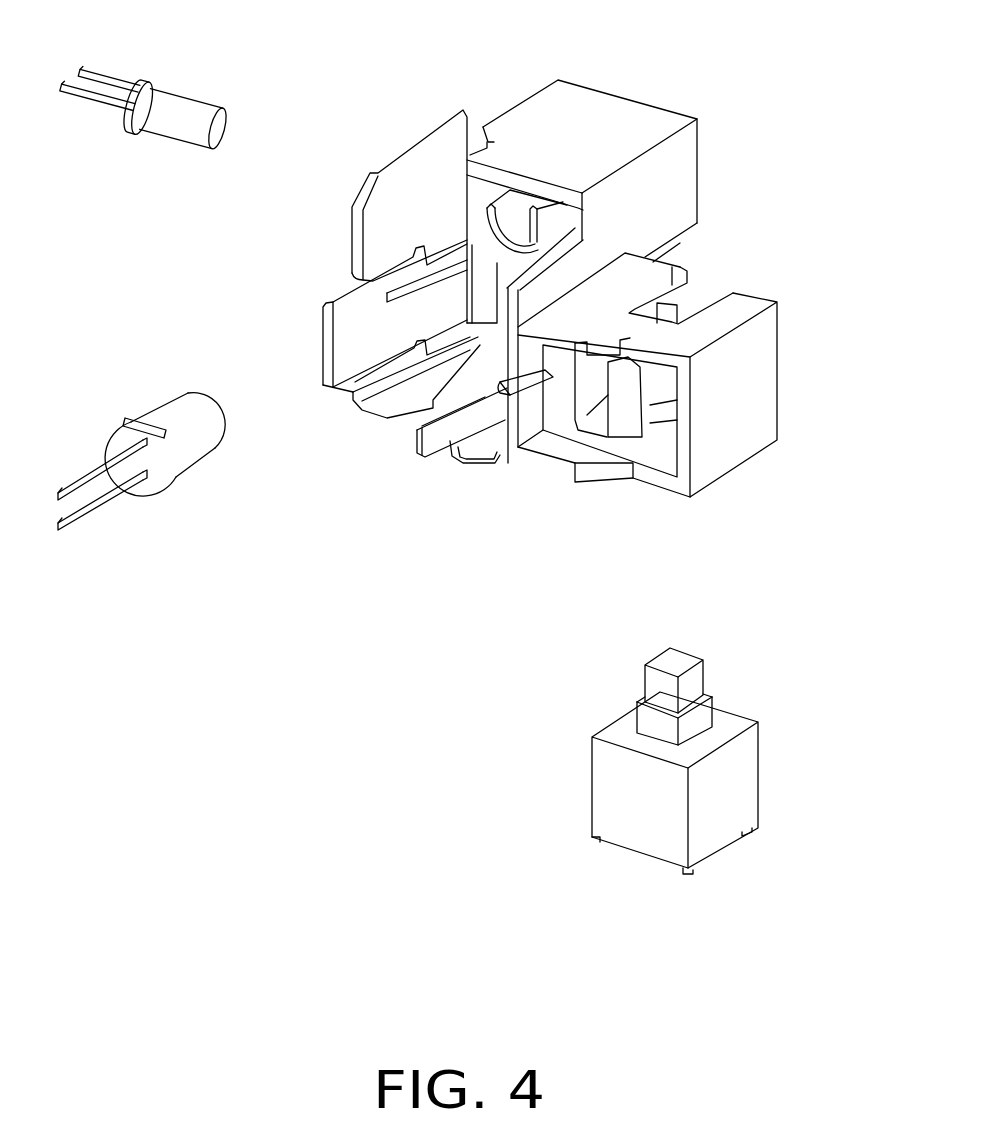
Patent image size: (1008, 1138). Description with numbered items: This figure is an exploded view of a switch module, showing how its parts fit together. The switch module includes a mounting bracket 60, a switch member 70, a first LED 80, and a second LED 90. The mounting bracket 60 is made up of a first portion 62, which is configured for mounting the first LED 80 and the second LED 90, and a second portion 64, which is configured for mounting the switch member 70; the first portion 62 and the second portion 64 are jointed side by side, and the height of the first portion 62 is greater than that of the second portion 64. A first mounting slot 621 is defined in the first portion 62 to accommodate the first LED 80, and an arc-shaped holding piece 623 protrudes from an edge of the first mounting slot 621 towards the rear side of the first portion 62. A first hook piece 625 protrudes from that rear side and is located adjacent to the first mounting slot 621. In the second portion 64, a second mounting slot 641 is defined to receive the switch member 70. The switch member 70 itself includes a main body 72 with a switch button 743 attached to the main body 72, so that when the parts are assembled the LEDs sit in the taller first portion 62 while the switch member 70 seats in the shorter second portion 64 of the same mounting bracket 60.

The mounting bracket 60 is at (717, 140).
The first portion 62 is at (658, 120).
The first mounting slot 621 is at (523, 203).
The arc-shaped holding piece 623 is at (480, 203).
The first hook piece 625 is at (533, 217).
The second portion 64 is at (748, 305).
The second mounting slot 641 is at (698, 297).
The switch member 70 is at (785, 685).
The main body 72 is at (740, 783).
The switch button 743 is at (663, 660).
The first LED 80 is at (170, 410).
The second LED 90 is at (185, 110).